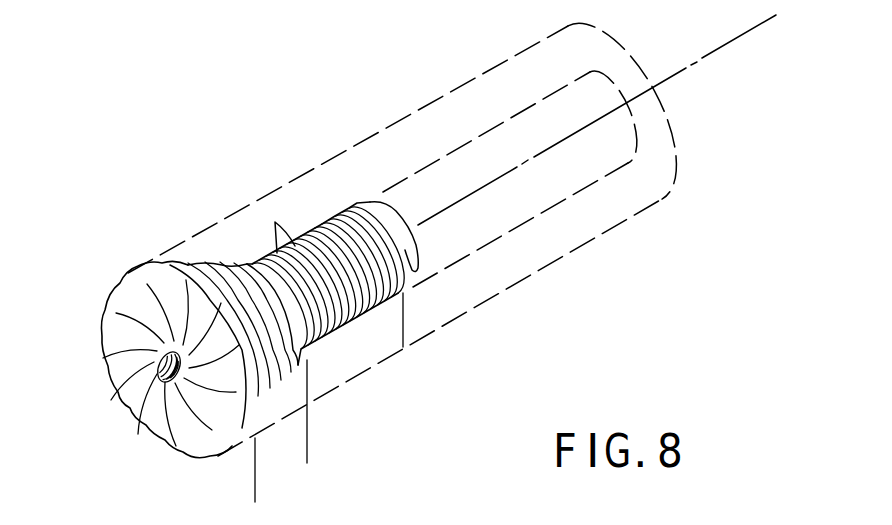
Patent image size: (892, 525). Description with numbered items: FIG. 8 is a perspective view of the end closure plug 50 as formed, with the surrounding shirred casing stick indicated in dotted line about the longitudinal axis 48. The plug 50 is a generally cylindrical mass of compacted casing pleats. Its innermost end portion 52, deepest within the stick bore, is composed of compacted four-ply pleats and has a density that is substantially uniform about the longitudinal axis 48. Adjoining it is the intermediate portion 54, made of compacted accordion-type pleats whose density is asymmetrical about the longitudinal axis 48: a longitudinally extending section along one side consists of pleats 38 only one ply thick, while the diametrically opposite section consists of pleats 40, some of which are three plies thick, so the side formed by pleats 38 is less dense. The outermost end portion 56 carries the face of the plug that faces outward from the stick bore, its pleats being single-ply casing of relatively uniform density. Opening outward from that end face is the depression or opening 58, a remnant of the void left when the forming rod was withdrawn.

The pleats 38 is at (275, 223).
The pleats 40 is at (383, 303).
The longitudinal axis 48 is at (688, 66).
The plug 50 is at (283, 181).
The innermost end portion 52 is at (414, 238).
The intermediate portion 54 is at (402, 327).
The outermost end portion 56 is at (218, 494).
The opening 58 is at (160, 369).